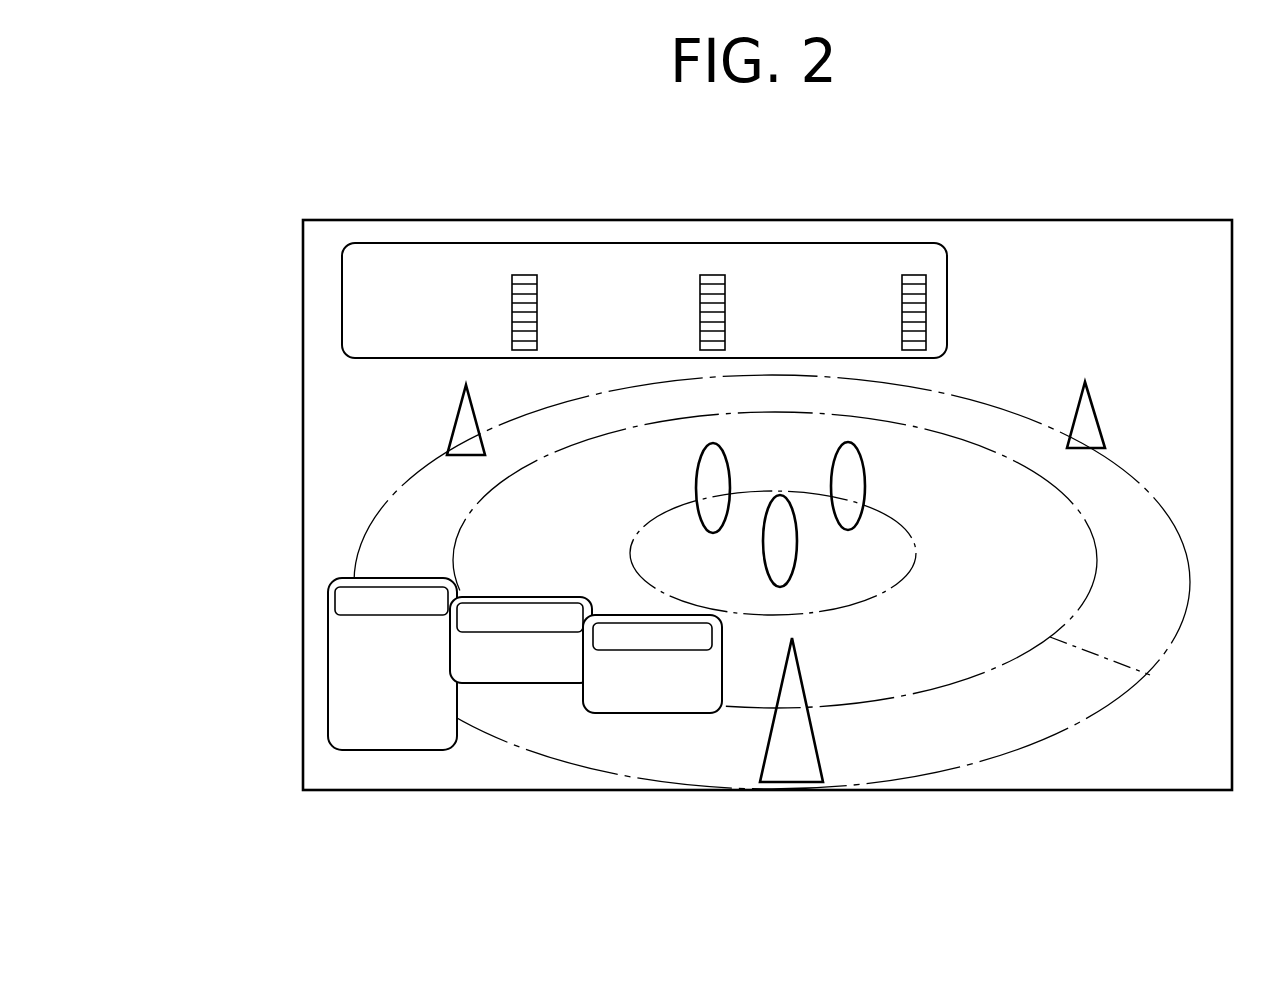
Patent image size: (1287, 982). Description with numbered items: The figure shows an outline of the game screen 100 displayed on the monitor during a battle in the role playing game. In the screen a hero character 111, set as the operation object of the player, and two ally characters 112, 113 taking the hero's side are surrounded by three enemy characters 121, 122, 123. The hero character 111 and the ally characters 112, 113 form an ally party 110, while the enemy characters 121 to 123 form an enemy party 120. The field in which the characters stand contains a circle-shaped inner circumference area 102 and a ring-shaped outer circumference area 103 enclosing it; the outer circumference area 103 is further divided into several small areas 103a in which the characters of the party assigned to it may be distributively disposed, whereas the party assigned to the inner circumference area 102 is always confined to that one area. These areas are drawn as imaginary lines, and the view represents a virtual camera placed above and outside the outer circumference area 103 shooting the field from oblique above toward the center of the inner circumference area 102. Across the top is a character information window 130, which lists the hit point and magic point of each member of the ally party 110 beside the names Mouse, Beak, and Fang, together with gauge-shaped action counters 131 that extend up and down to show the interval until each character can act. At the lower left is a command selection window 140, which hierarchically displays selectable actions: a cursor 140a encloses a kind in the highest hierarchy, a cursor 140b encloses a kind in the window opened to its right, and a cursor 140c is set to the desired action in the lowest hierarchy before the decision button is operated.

The game screen 100 is at (795, 214).
The inner circumference area 102 is at (918, 553).
The outer circumference area 103 is at (1013, 412).
The small area 103a is at (458, 528).
The ally party 110 is at (783, 432).
The hero character 111 is at (696, 468).
The ally character 112 is at (866, 466).
The ally character 113 is at (764, 558).
The enemy party 120 is at (1128, 348).
The enemy character 121 is at (456, 420).
The enemy character 122 is at (1105, 420).
The enemy character 123 is at (804, 772).
The character information window 130 is at (612, 243).
The action counter 131 is at (526, 273).
The command selection window 140 is at (405, 756).
The cursor 140a is at (335, 603).
The cursor 140b is at (515, 601).
The cursor 140c is at (714, 638).